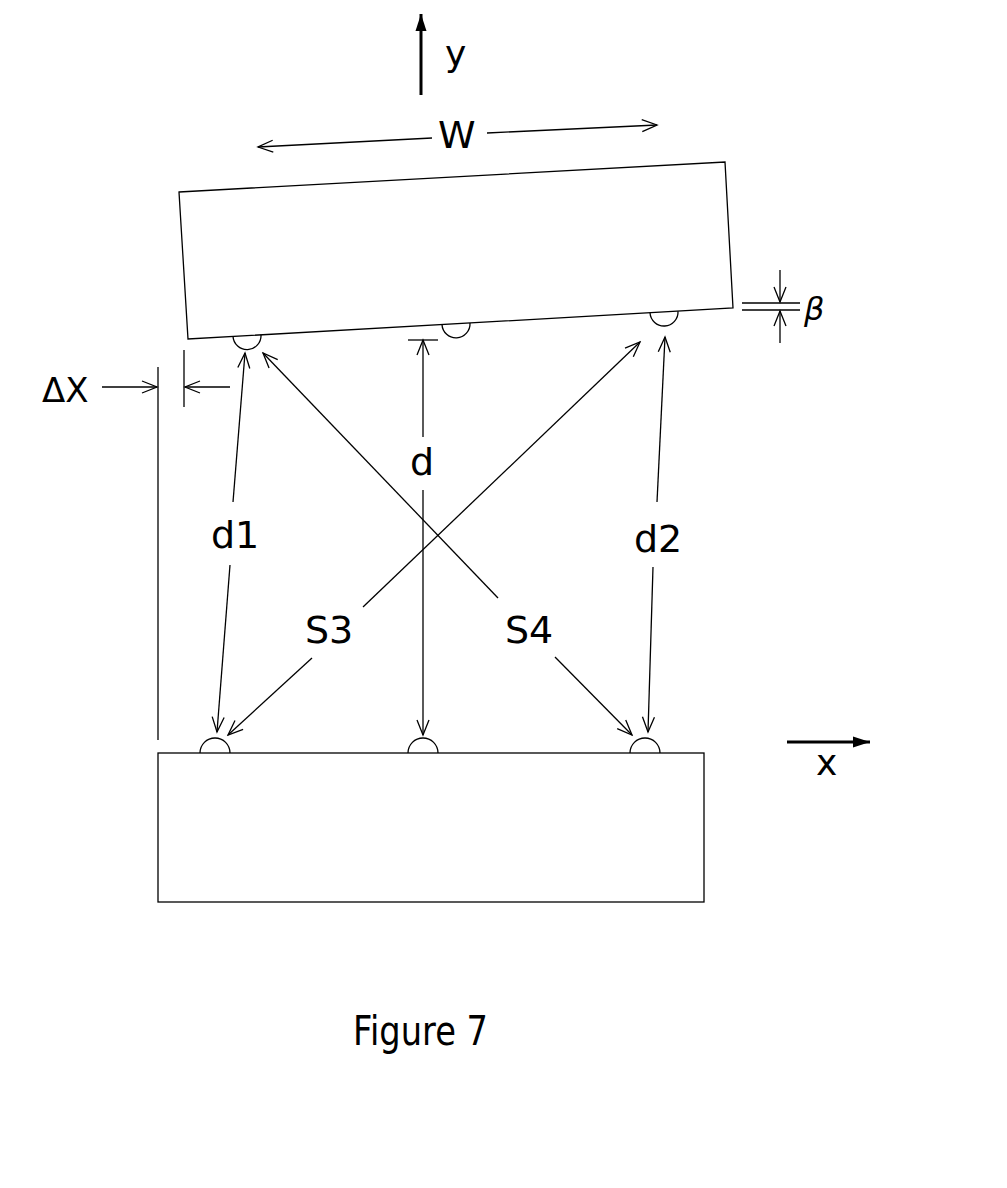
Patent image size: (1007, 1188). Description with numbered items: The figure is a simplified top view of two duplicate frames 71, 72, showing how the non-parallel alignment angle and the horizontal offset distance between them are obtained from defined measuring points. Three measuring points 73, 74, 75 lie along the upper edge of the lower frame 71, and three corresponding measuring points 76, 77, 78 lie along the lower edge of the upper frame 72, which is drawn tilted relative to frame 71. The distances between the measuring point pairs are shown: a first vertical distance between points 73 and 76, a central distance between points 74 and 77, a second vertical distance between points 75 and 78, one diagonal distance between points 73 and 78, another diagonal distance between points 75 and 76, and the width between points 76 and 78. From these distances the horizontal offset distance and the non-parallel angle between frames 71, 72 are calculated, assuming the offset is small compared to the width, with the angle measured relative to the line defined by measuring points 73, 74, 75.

The frame 71 is at (147, 835).
The frame 72 is at (177, 280).
The measuring point 73 is at (237, 743).
The measuring point 74 is at (438, 728).
The measuring point 75 is at (663, 730).
The measuring point 76 is at (270, 343).
The measuring point 77 is at (457, 342).
The measuring point 78 is at (682, 332).